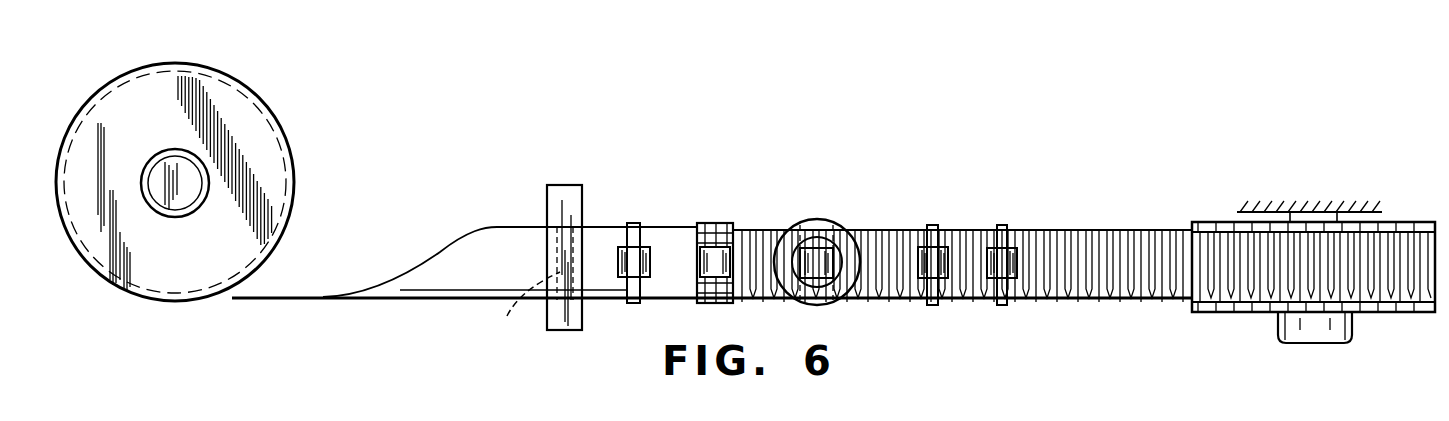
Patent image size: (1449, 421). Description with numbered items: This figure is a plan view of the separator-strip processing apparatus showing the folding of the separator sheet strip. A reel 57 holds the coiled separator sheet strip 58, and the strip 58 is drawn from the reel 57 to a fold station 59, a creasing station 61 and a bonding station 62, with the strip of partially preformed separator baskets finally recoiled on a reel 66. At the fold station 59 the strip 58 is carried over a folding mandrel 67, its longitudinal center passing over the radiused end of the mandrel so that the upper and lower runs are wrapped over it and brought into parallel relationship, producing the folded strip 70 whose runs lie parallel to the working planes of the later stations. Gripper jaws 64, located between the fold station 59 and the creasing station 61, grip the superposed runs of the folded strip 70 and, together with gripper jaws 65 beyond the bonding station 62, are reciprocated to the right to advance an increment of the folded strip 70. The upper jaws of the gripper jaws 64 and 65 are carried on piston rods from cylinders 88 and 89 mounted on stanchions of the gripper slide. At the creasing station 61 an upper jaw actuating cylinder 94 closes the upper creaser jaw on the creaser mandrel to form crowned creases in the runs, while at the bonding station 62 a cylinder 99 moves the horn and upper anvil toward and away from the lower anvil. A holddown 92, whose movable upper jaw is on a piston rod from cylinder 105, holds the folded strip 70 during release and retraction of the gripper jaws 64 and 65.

The reel 57 is at (253, 109).
The separator sheet strip 58 is at (282, 296).
The fold station 59 is at (549, 183).
The folding mandrel 67 is at (521, 304).
The folded strip 70 is at (600, 232).
The gripper jaws 64 is at (633, 305).
The cylinder 88 is at (646, 255).
The creasing station 61 is at (715, 223).
The upper jaw actuating cylinder 94 is at (720, 258).
The bonding station 62 is at (812, 217).
The cylinder 99 is at (825, 258).
The holddown 92 is at (930, 226).
The cylinder 105 is at (942, 258).
The cylinder 89 is at (1011, 252).
The gripper jaws 65 is at (1003, 305).
The reel 66 is at (1243, 313).